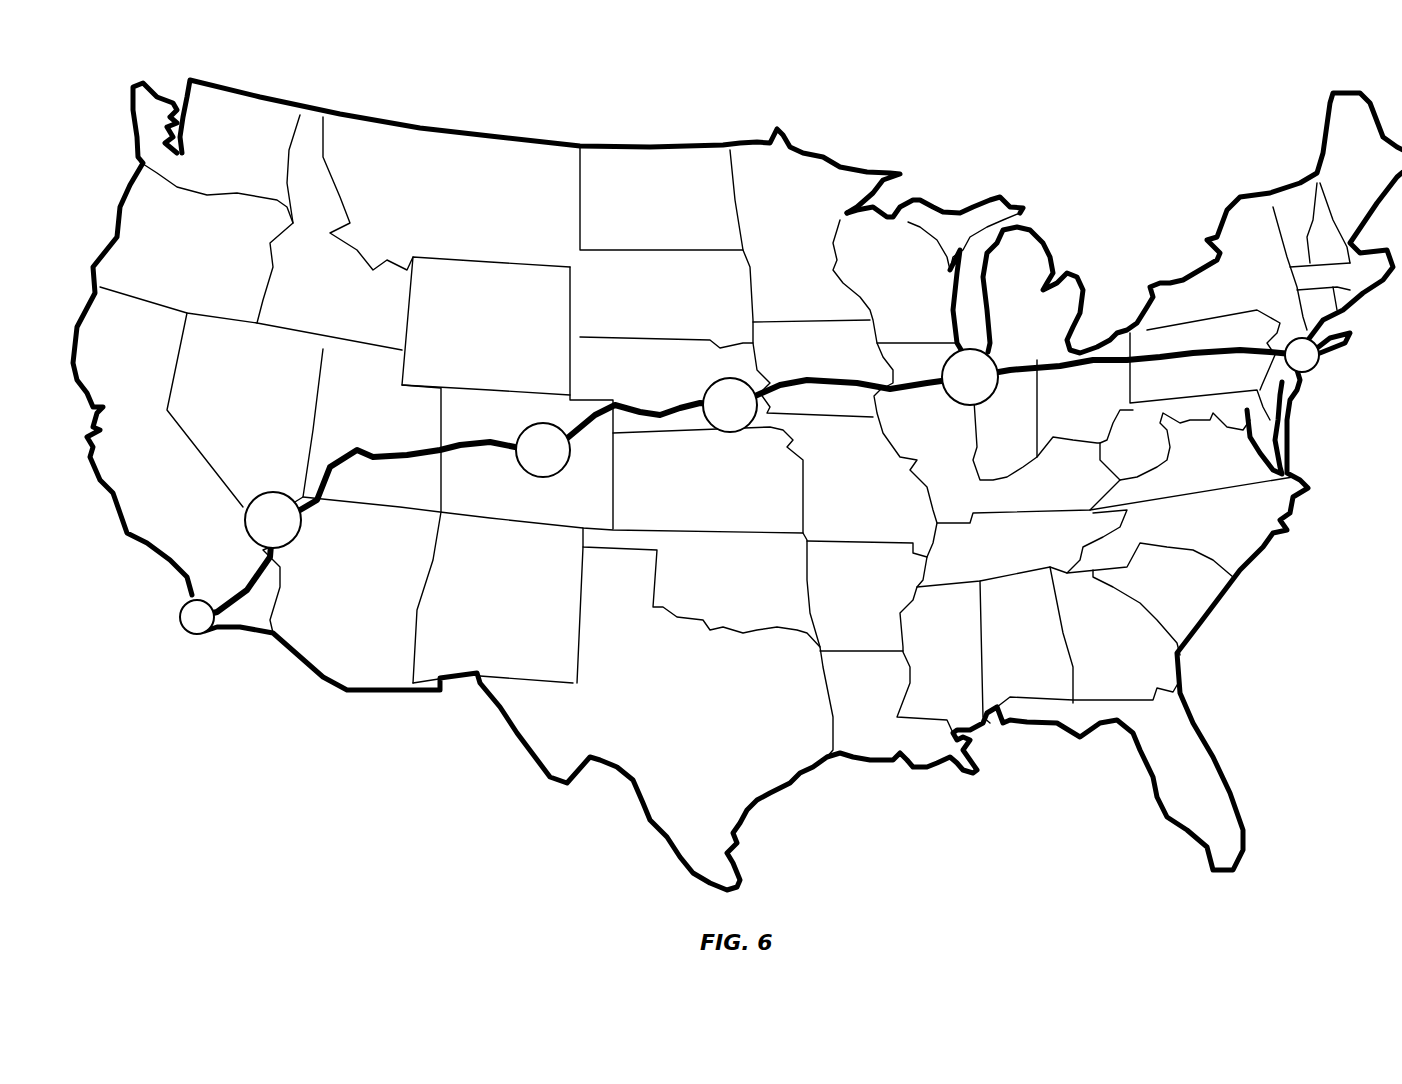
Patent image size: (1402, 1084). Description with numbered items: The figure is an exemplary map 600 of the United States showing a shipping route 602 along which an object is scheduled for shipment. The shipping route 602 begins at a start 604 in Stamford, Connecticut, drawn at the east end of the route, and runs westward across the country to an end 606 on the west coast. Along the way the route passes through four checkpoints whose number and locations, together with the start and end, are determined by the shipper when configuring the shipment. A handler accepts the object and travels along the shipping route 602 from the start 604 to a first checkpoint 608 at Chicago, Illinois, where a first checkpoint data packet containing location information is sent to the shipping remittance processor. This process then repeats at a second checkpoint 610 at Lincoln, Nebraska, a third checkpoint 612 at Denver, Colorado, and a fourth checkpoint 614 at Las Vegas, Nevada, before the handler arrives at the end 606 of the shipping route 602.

The map 600 is at (113, 99).
The shipping route 602 is at (843, 378).
The start 604 is at (1318, 365).
The end 606 is at (186, 634).
The first checkpoint 608 is at (973, 395).
The second checkpoint 610 is at (730, 430).
The third checkpoint 612 is at (553, 468).
The fourth checkpoint 614 is at (283, 530).